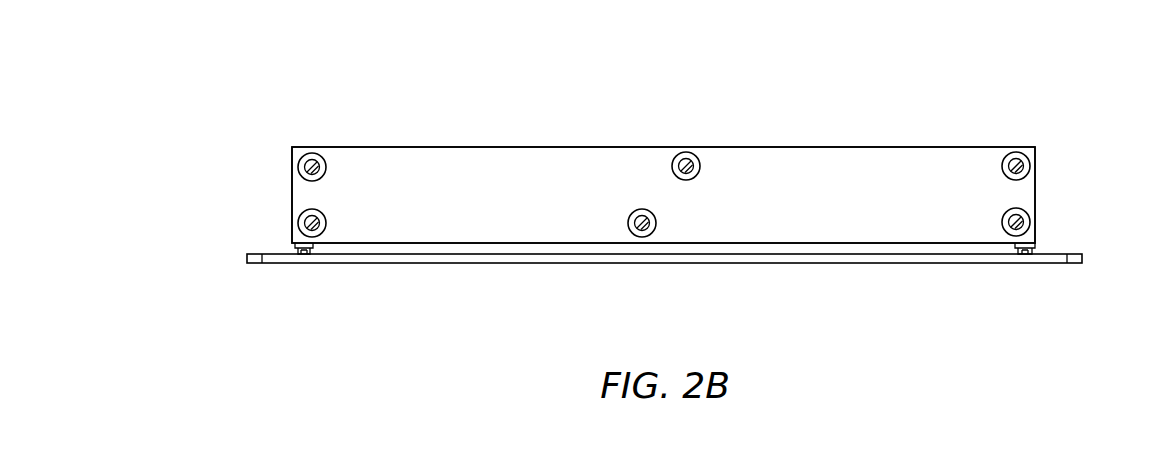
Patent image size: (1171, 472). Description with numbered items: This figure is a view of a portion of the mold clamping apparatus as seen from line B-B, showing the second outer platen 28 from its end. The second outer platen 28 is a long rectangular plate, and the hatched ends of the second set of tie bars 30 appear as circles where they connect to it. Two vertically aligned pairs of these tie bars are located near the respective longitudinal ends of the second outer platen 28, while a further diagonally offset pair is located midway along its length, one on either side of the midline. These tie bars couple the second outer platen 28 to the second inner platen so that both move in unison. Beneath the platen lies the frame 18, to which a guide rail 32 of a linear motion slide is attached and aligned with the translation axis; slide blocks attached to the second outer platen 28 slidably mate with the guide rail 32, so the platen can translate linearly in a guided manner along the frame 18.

The frame 18 is at (284, 85).
The second outer platen 28 is at (790, 158).
The second set of tie bars 30 is at (1035, 166).
The guide rails 32 is at (1025, 263).